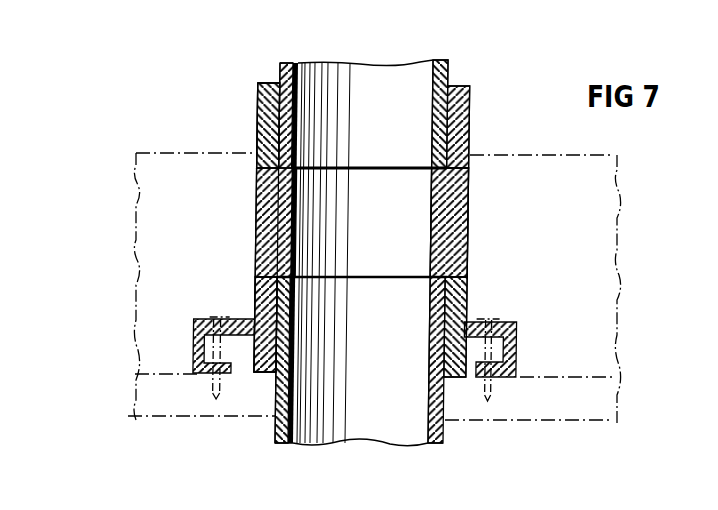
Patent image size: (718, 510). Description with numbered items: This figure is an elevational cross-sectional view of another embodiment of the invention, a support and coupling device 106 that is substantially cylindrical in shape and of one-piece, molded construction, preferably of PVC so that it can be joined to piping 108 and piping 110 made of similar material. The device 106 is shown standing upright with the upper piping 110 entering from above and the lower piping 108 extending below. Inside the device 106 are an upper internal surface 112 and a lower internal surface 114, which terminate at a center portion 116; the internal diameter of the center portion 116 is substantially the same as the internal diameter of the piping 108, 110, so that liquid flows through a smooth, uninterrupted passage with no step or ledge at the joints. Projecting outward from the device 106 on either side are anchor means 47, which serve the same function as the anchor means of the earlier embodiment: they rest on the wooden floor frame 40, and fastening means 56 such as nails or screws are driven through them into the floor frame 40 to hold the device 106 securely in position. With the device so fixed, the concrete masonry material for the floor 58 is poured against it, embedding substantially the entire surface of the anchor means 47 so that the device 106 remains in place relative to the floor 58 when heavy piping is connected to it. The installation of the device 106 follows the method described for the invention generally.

The piping 110 is at (450, 76).
The upper internal surface 112 is at (258, 108).
The support and coupling device 106 is at (456, 150).
The center portion 116 is at (440, 232).
The piping 108 is at (419, 428).
The lower internal surface 114 is at (257, 339).
The anchor means 47 is at (198, 340).
The fastening means 56 is at (229, 318).
The floor 58 is at (155, 228).
The floor frame 40 is at (186, 396).